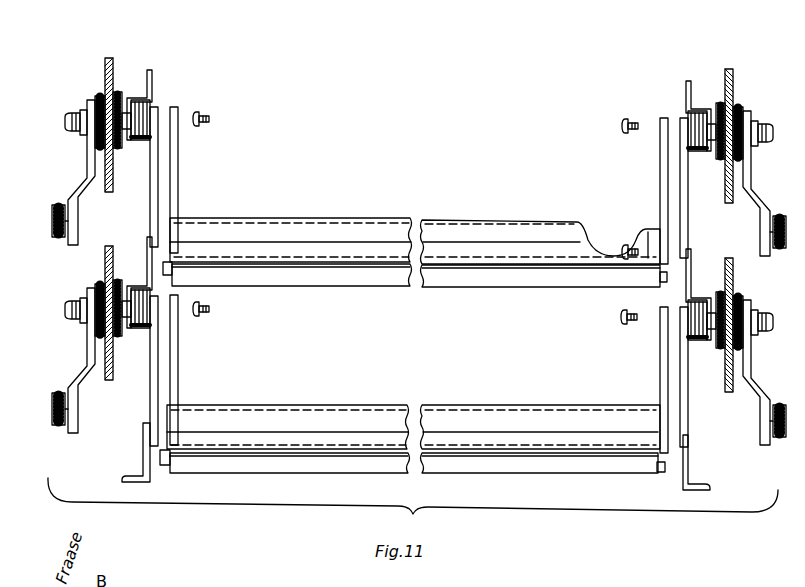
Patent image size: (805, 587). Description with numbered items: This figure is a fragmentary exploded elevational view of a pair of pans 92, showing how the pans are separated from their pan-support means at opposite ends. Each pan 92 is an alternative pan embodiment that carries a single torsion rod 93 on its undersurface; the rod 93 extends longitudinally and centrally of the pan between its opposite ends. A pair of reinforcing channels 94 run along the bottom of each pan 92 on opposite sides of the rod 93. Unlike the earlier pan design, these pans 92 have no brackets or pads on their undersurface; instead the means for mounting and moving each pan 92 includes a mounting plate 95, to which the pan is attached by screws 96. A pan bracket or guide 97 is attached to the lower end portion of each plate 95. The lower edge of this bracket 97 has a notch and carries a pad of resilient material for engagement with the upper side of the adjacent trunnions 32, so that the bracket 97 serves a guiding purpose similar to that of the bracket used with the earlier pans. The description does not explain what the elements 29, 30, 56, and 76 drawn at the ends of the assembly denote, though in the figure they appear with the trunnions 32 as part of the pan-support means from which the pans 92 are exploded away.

The upper guide plate 29 is at (105, 72).
The lower guide plate 30 is at (110, 380).
The trunnion 32 is at (146, 142).
The mounting bracket arm 56 is at (80, 176).
The knob 76 is at (56, 225).
The pan 92 is at (325, 216).
The torsion rod 93 is at (163, 268).
The reinforcing channel 94 is at (507, 275).
The mounting plate 95 is at (150, 190).
The screw 96 is at (206, 114).
The pan bracket 97 is at (147, 84).